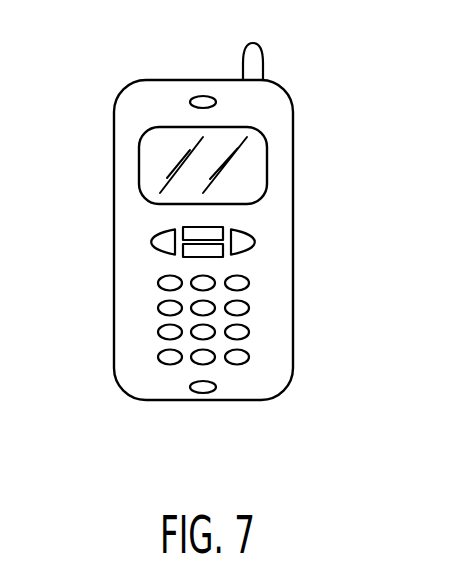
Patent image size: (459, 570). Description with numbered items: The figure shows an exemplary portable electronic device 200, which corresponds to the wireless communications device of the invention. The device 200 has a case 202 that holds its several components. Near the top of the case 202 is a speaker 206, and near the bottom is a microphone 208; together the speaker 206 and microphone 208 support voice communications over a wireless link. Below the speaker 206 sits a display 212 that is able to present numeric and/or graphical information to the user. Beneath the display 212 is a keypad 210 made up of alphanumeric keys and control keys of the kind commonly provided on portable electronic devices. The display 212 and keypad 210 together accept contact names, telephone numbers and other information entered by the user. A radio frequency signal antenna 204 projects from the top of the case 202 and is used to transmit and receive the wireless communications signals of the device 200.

The portable electronic device 200 is at (312, 480).
The case 202 is at (293, 329).
The radio frequency signal antenna 204 is at (263, 66).
The speaker 206 is at (204, 96).
The microphone 208 is at (203, 394).
The keypad 210 is at (152, 325).
The display 212 is at (138, 166).